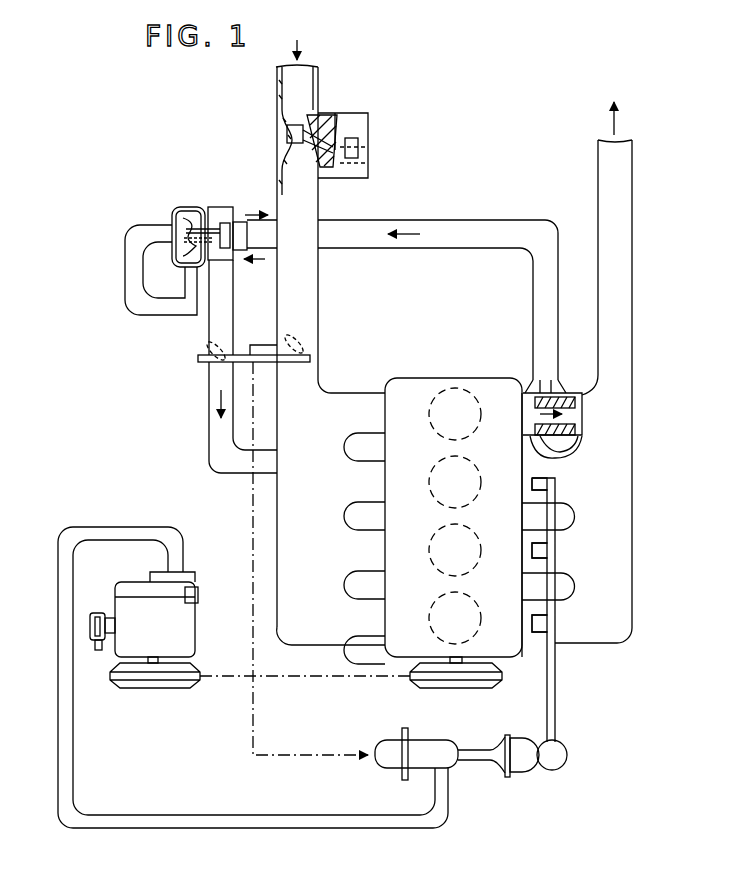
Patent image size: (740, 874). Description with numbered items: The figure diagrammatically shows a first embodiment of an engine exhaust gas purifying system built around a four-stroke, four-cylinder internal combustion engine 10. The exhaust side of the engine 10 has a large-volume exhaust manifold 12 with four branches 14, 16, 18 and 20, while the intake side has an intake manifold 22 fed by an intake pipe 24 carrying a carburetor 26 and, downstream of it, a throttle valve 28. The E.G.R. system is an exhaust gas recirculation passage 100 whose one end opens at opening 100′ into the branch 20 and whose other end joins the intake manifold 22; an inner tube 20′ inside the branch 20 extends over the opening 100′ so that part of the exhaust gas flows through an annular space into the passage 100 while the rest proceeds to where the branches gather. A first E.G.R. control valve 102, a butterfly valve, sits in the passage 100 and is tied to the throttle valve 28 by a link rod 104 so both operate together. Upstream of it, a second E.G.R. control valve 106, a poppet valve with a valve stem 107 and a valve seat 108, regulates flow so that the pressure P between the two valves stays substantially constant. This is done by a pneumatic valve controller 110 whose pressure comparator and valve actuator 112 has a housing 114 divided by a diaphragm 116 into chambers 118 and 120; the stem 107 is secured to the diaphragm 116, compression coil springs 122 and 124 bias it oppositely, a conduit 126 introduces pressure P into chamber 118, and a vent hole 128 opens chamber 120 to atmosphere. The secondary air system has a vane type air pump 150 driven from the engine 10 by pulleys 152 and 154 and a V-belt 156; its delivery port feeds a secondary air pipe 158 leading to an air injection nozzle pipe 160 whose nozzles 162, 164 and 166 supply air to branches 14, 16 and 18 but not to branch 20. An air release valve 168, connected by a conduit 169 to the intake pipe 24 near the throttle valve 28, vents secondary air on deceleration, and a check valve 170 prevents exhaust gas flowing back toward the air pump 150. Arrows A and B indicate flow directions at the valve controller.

The internal combustion engine 10 is at (420, 376).
The exhaust manifold 12 is at (633, 560).
The exhaust branch 14 is at (534, 598).
The exhaust branch 16 is at (534, 528).
The exhaust branch 18 is at (532, 452).
The exhaust branch 20 is at (529, 392).
The inner tube 20′ is at (572, 448).
The intake manifold 22 is at (278, 609).
The intake pipe 24 is at (318, 206).
The carburetor 26 is at (340, 112).
The throttle valve 28 is at (312, 341).
The exhaust gas recirculation passage 100 is at (452, 221).
The opening of the E.G.R. passage 100′ is at (582, 395).
The first E.G.R. control valve 102 is at (207, 356).
The link rod 104 is at (260, 362).
The second E.G.R. control valve 106 is at (236, 221).
The valve stem 107 is at (220, 206).
The valve seat 108 is at (246, 245).
The pneumatic valve controller 110 is at (112, 157).
The pressure comparator and valve actuator 112 is at (191, 205).
The housing 114 is at (193, 206).
The diaphragm 116 is at (188, 292).
The chamber 118 is at (175, 213).
The chamber 120 is at (190, 202).
The compression coil spring 122 is at (164, 275).
The compression coil spring 124 is at (220, 262).
The conduit 126 is at (133, 300).
The vent hole 128 is at (209, 206).
The air pump 150 is at (122, 607).
The pulley 152 is at (143, 688).
The pulley 154 is at (441, 688).
The V-belt 156 is at (275, 678).
The secondary air pipe 158 is at (173, 815).
The air injection nozzle pipe 160 is at (552, 636).
The air injection nozzle 162 is at (538, 616).
The air injection nozzle 164 is at (540, 547).
The air injection nozzle 166 is at (540, 477).
The air release valve 168 is at (447, 757).
The conduit 169 is at (256, 728).
The check valve 170 is at (527, 767).
The flow direction A is at (250, 214).
The flow direction B is at (247, 259).
The pressure P is at (219, 313).